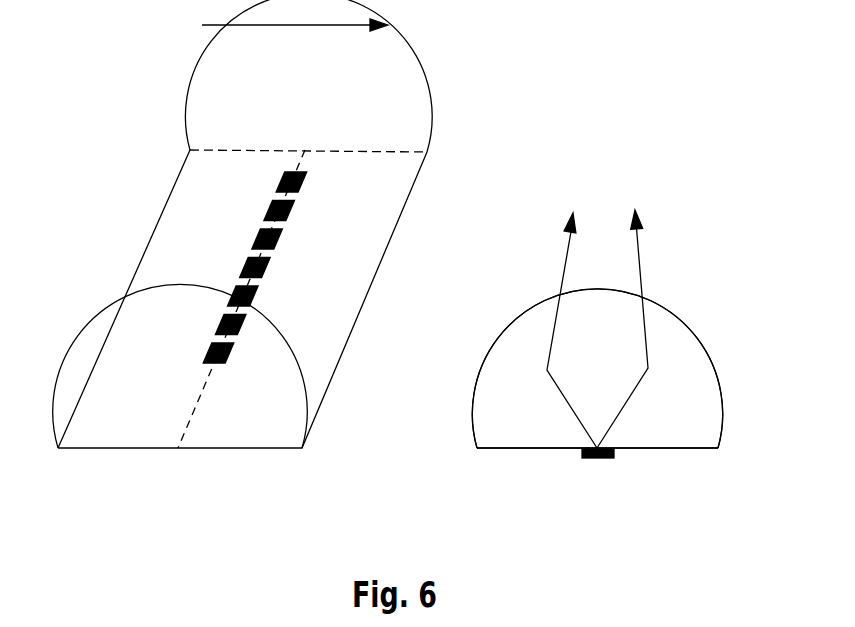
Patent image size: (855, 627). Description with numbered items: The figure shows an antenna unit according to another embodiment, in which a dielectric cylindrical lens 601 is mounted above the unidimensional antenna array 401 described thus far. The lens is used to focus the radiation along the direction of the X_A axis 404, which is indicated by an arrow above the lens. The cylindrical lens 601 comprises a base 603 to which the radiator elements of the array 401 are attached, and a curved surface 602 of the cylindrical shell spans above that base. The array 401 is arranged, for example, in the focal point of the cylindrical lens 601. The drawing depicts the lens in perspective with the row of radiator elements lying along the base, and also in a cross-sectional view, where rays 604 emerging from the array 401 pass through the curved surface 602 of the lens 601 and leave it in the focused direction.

The unidimensional antenna array 401 is at (293, 210).
The X_A axis 404 is at (223, 25).
The cylindrical lens 601 is at (258, 402).
The curved surface 602 is at (678, 389).
The base 603 is at (507, 450).
The light rays 604 is at (640, 258).